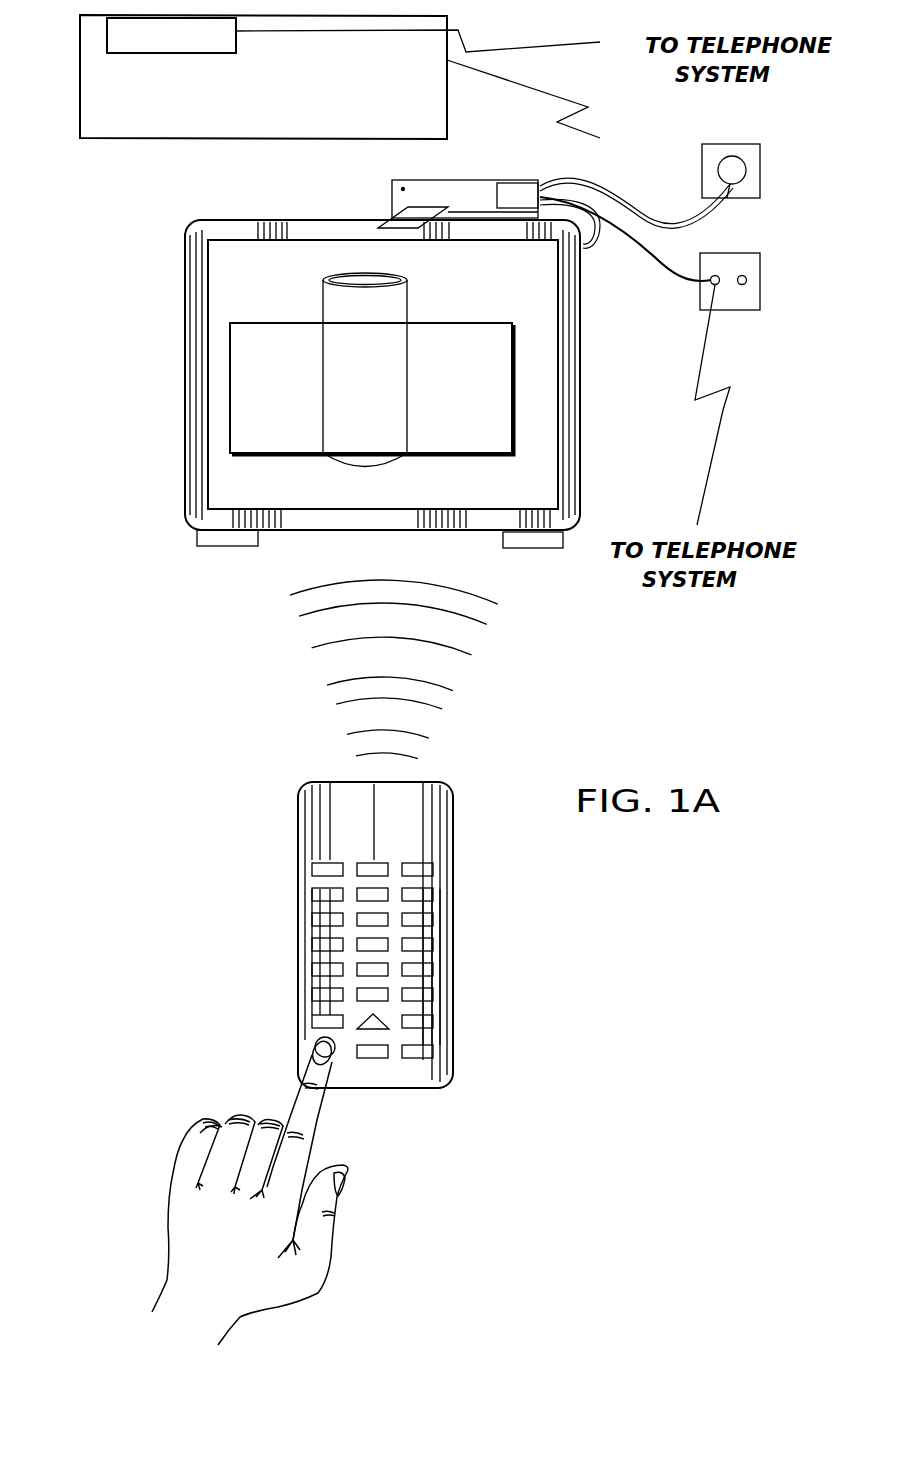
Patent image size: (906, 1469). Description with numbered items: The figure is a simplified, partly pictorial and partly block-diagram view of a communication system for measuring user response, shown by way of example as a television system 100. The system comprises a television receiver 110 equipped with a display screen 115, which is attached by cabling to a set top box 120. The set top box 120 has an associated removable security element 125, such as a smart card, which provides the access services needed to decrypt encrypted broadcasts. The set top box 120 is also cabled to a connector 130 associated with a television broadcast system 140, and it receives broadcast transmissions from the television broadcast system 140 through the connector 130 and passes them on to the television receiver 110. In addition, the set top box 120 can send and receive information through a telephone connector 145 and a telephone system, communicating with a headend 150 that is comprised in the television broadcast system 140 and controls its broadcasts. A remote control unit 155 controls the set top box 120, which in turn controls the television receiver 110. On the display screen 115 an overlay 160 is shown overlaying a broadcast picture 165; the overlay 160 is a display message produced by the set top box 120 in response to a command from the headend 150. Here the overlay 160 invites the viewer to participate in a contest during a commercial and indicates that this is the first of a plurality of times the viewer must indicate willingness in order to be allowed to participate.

The television system 100 is at (78, 478).
The television receiver 110 is at (190, 224).
The display screen 115 is at (220, 285).
The set top box 120 is at (392, 185).
The removable security element 125 is at (405, 214).
The connector 130 is at (762, 160).
The television broadcast system 140 is at (80, 107).
The telephone connector 145 is at (760, 268).
The headend 150 is at (107, 33).
The remote control unit 155 is at (305, 805).
The overlay 160 is at (230, 383).
The broadcast picture 165 is at (405, 295).